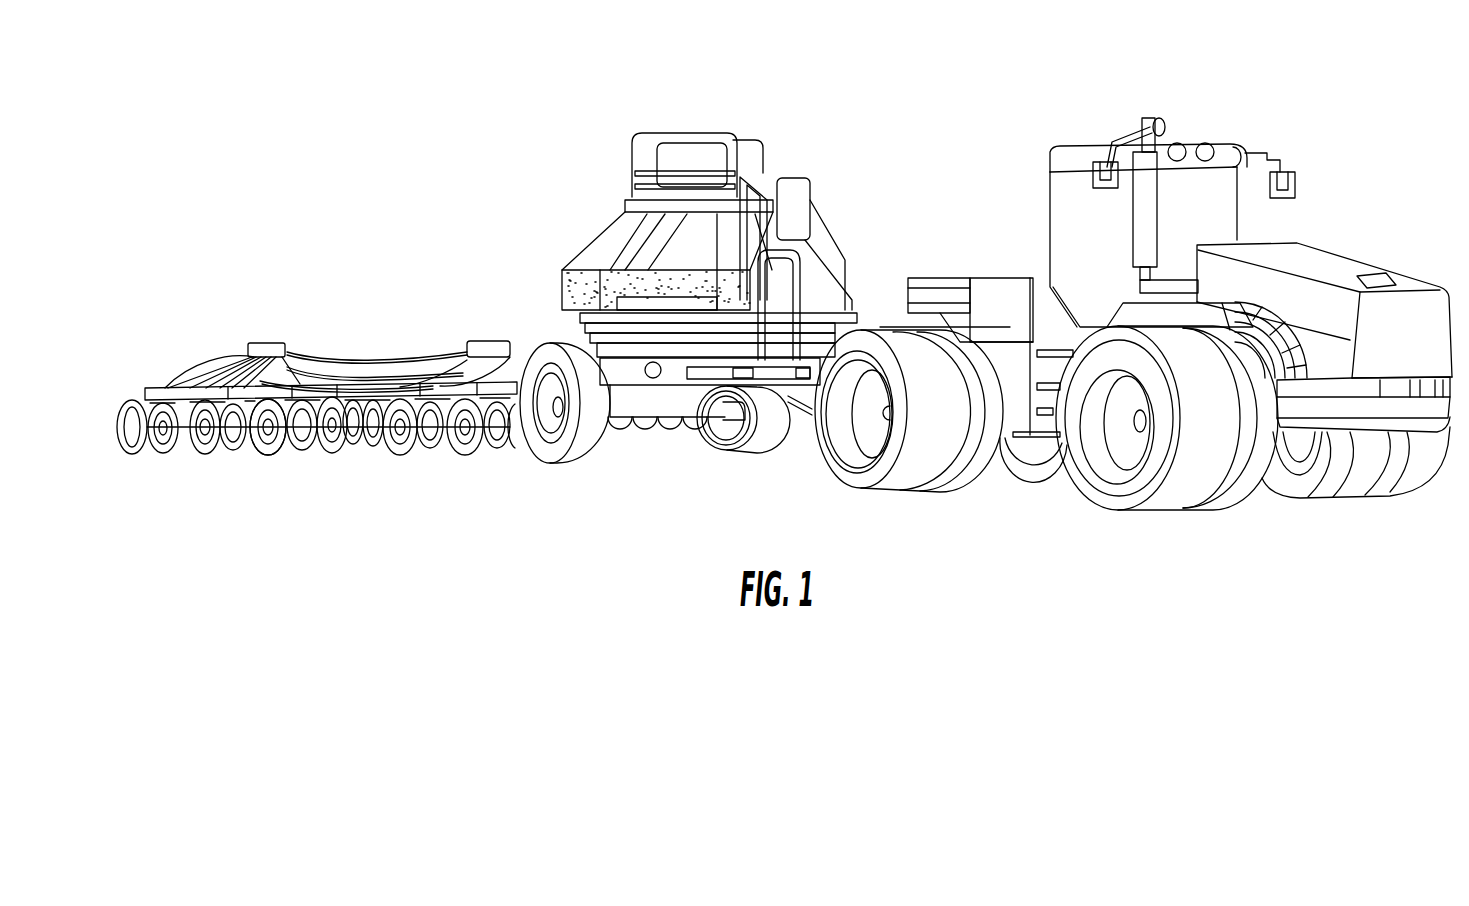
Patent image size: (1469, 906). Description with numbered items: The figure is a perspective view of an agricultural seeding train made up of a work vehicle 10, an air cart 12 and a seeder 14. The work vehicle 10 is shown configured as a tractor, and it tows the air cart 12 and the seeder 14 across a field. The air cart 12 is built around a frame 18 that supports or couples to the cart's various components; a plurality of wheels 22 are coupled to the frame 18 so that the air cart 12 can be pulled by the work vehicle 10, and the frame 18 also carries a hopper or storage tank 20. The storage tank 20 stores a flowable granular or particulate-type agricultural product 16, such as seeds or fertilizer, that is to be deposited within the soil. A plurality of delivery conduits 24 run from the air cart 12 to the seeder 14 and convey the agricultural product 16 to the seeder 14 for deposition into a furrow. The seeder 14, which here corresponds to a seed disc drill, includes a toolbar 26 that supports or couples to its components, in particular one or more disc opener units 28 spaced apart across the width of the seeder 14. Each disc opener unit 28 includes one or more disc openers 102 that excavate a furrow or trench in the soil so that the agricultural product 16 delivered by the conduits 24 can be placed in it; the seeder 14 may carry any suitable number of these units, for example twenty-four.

The work vehicle 10 is at (1294, 100).
The air cart 12 is at (685, 275).
The seeder 14 is at (317, 393).
The agricultural product 16 is at (567, 283).
The frame 18 is at (708, 373).
The storage tank 20 is at (603, 243).
The wheels 22 is at (583, 443).
The delivery conduits 24 is at (182, 372).
The toolbar 26 is at (390, 397).
The disc opener units 28 is at (463, 447).
The disc opener 102 is at (263, 455).